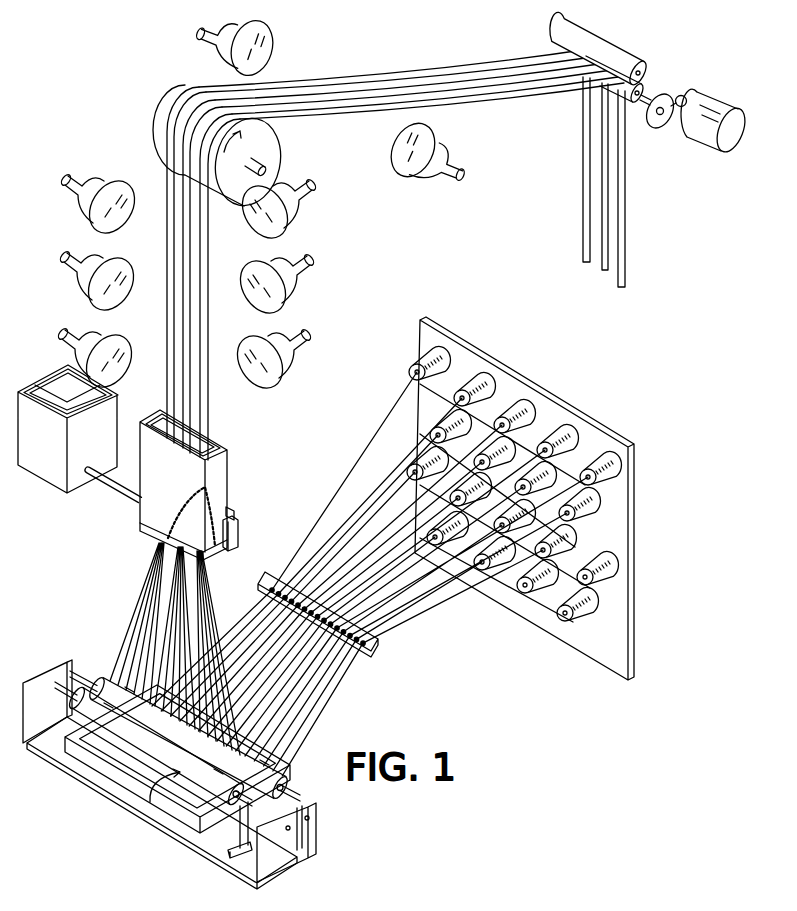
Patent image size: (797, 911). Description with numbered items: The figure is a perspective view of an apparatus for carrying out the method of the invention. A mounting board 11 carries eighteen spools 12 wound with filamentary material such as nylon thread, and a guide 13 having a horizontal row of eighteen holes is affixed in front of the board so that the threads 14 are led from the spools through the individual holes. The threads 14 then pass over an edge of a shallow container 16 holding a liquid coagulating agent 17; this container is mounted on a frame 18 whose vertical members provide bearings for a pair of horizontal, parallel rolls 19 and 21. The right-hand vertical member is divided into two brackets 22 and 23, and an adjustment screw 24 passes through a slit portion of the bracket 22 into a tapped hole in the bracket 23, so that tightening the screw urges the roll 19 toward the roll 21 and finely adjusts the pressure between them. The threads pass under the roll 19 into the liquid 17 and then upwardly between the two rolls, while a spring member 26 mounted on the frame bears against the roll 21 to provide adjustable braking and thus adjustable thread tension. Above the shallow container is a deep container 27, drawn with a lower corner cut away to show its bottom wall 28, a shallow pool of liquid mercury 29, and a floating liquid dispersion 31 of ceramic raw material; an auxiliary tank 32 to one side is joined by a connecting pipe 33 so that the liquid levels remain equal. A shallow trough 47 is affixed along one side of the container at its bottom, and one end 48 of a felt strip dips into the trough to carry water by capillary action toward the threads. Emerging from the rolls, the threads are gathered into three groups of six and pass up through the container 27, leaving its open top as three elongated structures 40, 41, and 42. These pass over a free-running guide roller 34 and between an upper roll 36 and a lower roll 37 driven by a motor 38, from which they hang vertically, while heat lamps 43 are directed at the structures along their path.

The mounting board 11 is at (568, 404).
The spools 12 is at (522, 407).
The guide 13 is at (376, 650).
The threads 14 is at (332, 512).
The shallow container 16 is at (128, 778).
The liquid coagulating agent 17 is at (140, 800).
The frame 18 is at (185, 845).
The roll 19 is at (100, 686).
The roll 21 is at (80, 694).
The bracket 22 is at (312, 848).
The bracket 23 is at (283, 855).
The adjustment screw 24 is at (70, 668).
The spring member 26 is at (235, 860).
The container 27 is at (215, 472).
The bottom wall 28 is at (205, 556).
The liquid mercury 29 is at (160, 548).
The liquid dispersion 31 is at (62, 393).
The auxiliary tank 32 is at (45, 472).
The connecting pipe 33 is at (115, 496).
The guide roller 34 is at (270, 143).
The upper roll 36 is at (641, 70).
The lower roll 37 is at (642, 92).
The motor 38 is at (720, 140).
The elongated structure 40 is at (200, 418).
The elongated structure 41 is at (186, 399).
The elongated structure 42 is at (170, 392).
The heat lamps 43 is at (266, 44).
The trough 47 is at (238, 530).
The end of felt strip 48 is at (230, 516).